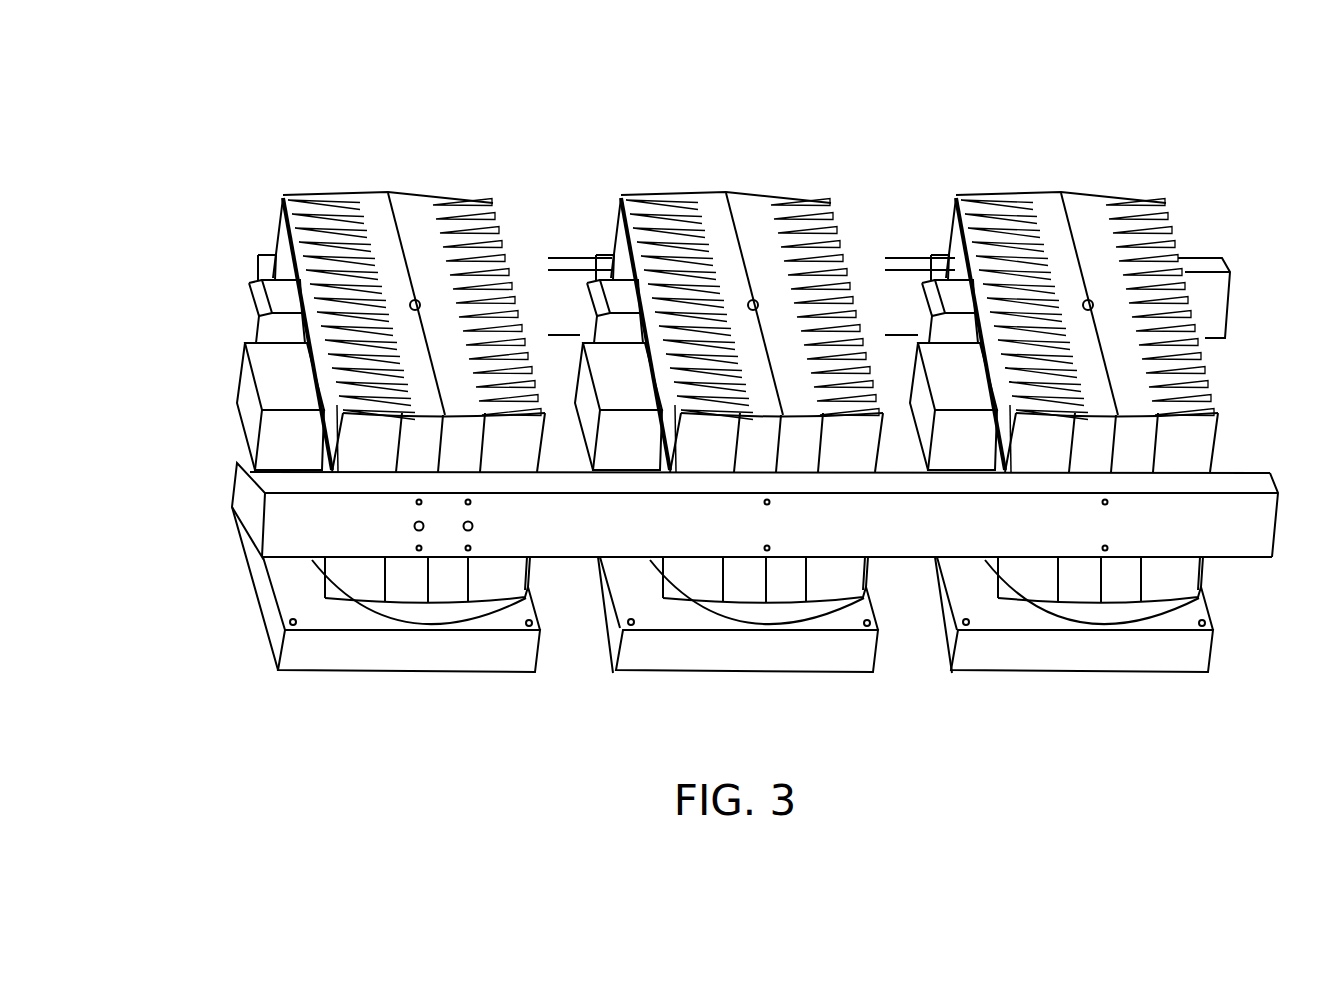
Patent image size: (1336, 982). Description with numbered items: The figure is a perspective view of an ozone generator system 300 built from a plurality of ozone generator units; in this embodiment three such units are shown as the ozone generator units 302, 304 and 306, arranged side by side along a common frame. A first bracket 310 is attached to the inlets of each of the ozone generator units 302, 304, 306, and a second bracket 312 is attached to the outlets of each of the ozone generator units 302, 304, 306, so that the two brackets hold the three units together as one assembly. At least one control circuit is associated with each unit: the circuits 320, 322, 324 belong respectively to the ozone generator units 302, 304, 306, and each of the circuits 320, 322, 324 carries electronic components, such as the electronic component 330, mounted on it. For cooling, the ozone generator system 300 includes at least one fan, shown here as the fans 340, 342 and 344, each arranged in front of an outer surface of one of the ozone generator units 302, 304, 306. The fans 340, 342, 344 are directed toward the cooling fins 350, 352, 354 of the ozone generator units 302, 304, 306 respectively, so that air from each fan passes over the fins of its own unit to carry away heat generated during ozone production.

The ozone generator system 300 is at (1168, 120).
The ozone generator unit 302 is at (402, 192).
The ozone generator unit 304 is at (742, 192).
The ozone generator unit 306 is at (1078, 192).
The first bracket 310 is at (578, 523).
The second bracket 312 is at (1200, 267).
The circuit 320 is at (270, 333).
The circuit 322 is at (617, 228).
The circuit 324 is at (950, 226).
The electronic component 330 is at (255, 417).
The fan 340 is at (430, 650).
The fan 342 is at (757, 657).
The fan 344 is at (1090, 647).
The cooling fins 350 is at (285, 223).
The cooling fins 352 is at (808, 222).
The cooling fins 354 is at (1145, 222).